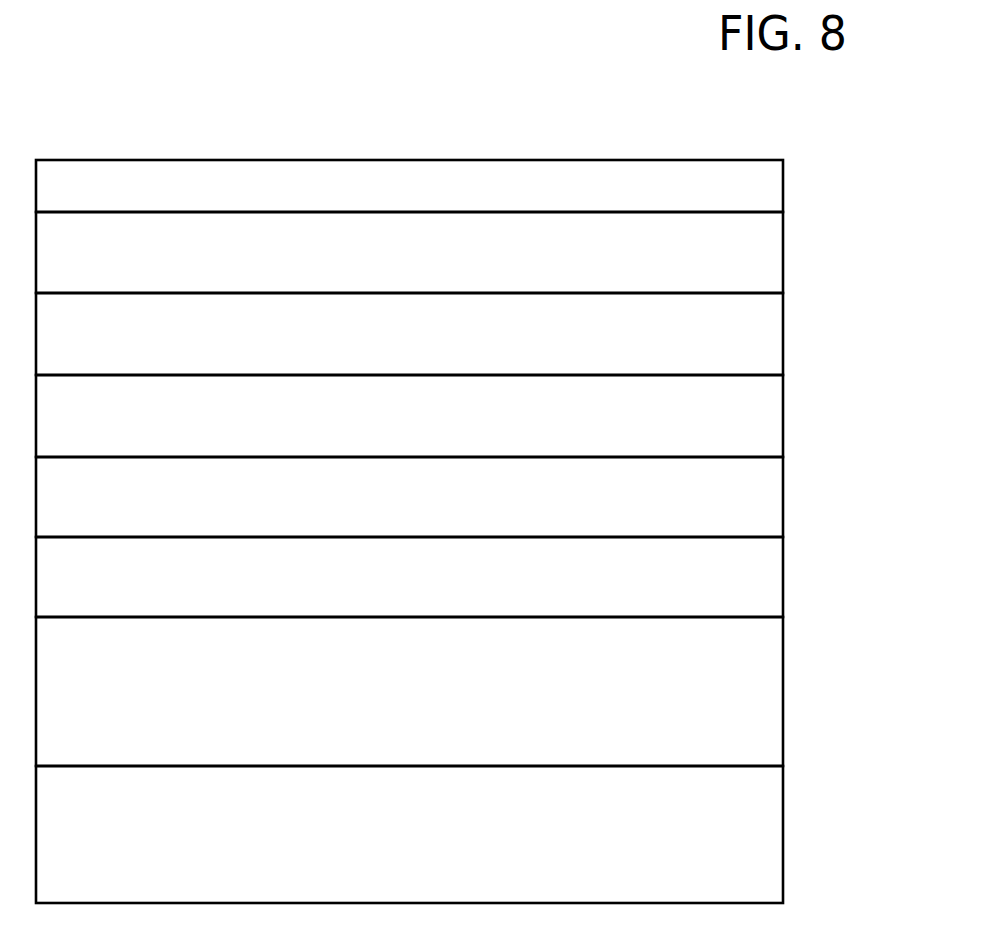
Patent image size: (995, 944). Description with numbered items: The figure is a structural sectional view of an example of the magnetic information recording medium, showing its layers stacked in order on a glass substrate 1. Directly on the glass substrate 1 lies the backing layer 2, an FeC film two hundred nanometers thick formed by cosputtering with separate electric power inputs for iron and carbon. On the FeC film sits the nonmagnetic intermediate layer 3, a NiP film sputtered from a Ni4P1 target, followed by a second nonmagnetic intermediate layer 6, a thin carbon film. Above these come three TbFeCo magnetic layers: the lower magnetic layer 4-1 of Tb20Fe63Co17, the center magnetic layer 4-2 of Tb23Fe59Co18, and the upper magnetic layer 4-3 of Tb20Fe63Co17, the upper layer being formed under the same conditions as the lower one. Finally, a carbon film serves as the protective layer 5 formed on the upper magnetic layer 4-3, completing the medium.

The glass substrate 1 is at (737, 845).
The backing layer 2 is at (737, 690).
The nonmagnetic intermediate layer 3 is at (736, 597).
The nonmagnetic intermediate layer 6 is at (736, 515).
The lower magnetic layer 4-1 is at (736, 433).
The center magnetic layer 4-2 is at (736, 352).
The upper magnetic layer 4-3 is at (736, 272).
The protective layer 5 is at (736, 178).